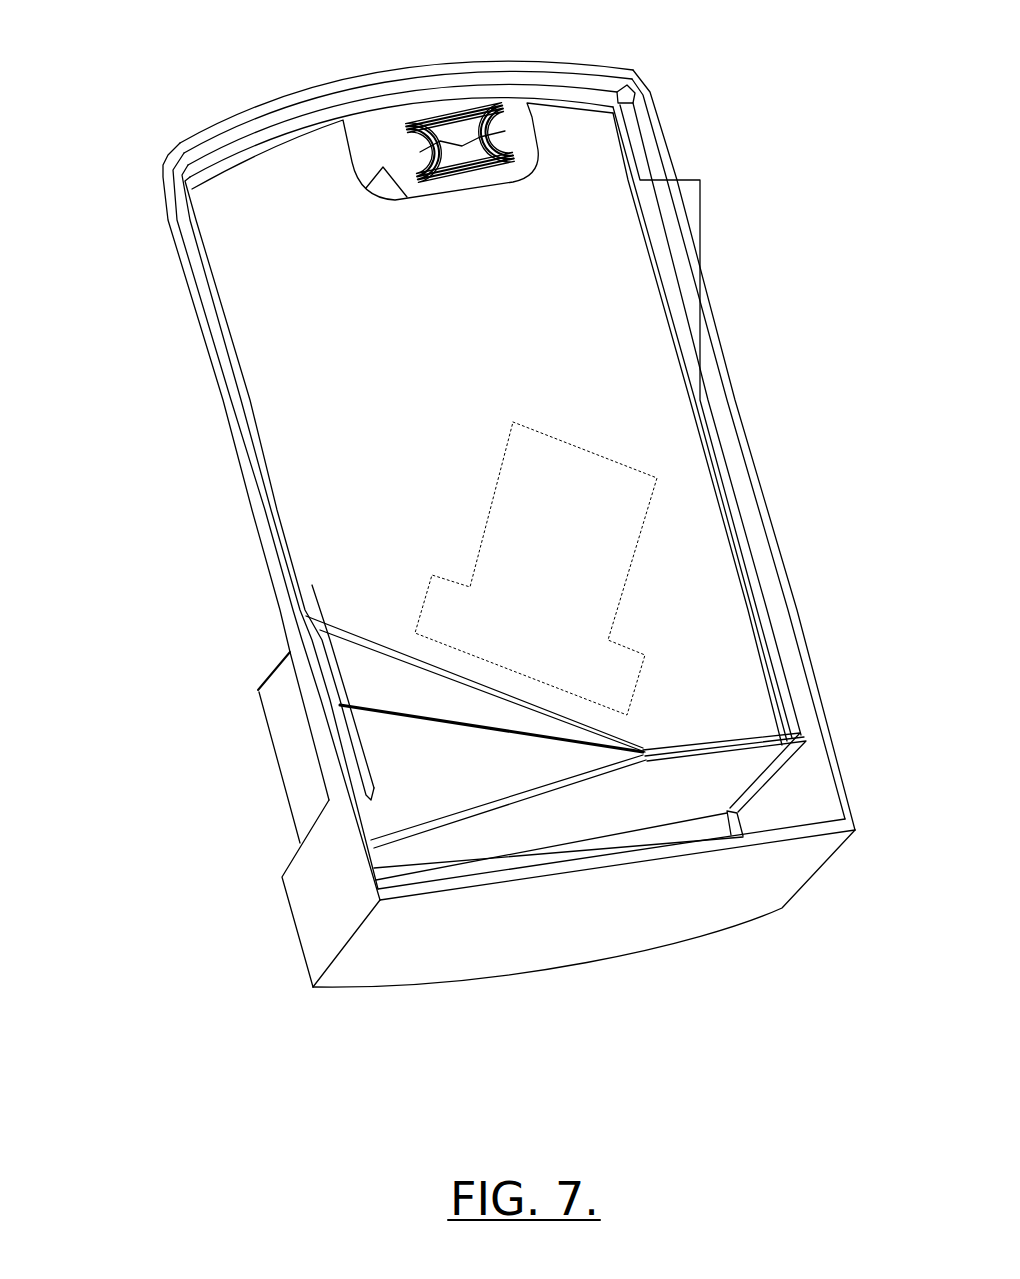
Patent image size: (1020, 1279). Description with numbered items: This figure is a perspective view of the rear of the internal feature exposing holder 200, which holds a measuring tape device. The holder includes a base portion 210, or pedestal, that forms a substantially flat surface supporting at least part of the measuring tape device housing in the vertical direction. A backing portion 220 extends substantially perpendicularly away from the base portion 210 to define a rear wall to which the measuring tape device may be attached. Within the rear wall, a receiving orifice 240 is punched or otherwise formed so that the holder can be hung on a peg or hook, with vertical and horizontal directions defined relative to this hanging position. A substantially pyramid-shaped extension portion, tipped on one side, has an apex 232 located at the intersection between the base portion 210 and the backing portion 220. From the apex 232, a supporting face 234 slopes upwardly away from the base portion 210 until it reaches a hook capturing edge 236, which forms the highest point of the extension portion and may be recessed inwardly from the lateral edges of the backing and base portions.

The internal feature exposing holder 200 is at (460, 493).
The base portion 210 is at (753, 900).
The backing portion 220 is at (646, 290).
The apex 232 is at (643, 752).
The supporting face 234 is at (358, 637).
The hook capturing edge 236 is at (258, 690).
The receiving orifice 240 is at (462, 147).